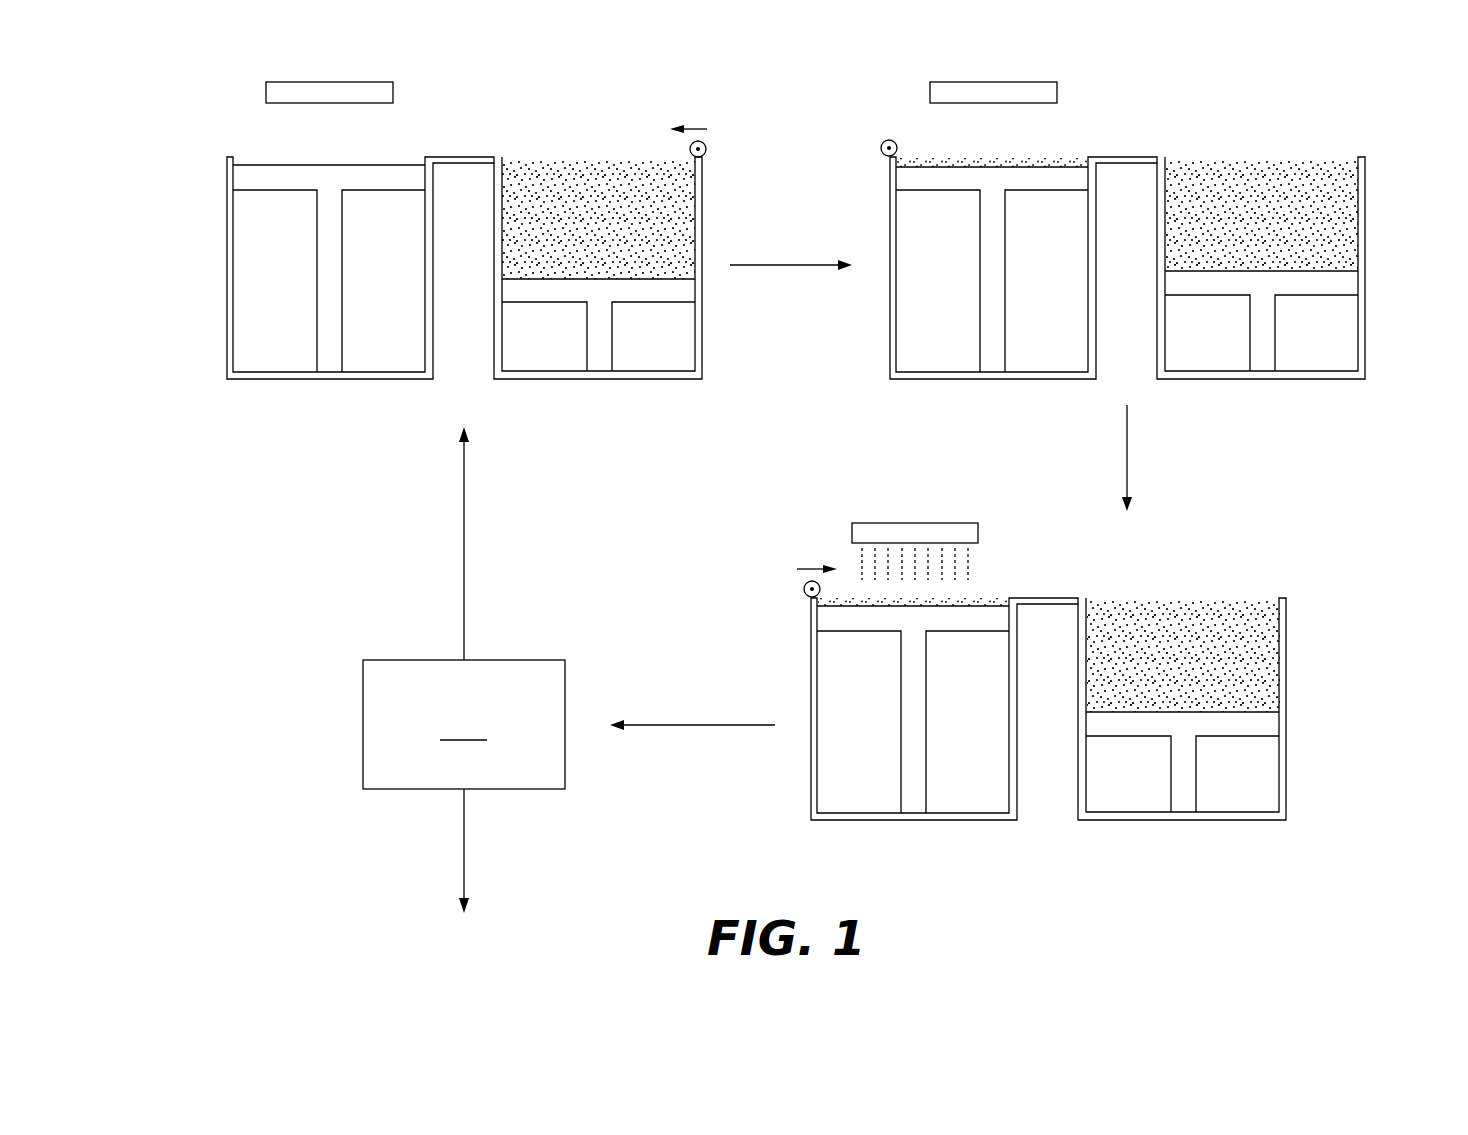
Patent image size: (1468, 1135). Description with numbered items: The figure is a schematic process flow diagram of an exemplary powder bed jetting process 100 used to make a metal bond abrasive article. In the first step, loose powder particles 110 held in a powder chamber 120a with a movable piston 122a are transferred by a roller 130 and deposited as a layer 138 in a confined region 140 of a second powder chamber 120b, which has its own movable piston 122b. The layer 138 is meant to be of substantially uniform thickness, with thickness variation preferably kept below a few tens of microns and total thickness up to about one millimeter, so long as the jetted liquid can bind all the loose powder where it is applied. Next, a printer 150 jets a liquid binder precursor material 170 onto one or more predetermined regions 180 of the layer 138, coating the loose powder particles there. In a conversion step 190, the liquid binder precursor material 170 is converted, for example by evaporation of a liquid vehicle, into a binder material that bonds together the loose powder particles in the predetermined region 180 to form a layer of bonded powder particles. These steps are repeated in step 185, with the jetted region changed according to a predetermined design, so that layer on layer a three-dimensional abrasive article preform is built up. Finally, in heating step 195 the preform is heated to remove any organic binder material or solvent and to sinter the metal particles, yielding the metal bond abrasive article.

The powder bed jetting process 100 is at (194, 85).
The loose powder particles 110 is at (663, 200).
The powder chamber 120a is at (703, 313).
The powder chamber 120b is at (228, 244).
The movable piston 122a is at (697, 290).
The movable piston 122b is at (238, 177).
The spreader roller 130 is at (706, 146).
The layer 138 is at (962, 156).
The confined region 140 is at (243, 162).
The printer 150 is at (388, 93).
The liquid binder precursor material 170 is at (862, 562).
The predetermined region 180 is at (955, 598).
The repeating step 185 is at (464, 530).
The conversion step 190 is at (464, 724).
The heating step 195 is at (464, 845).